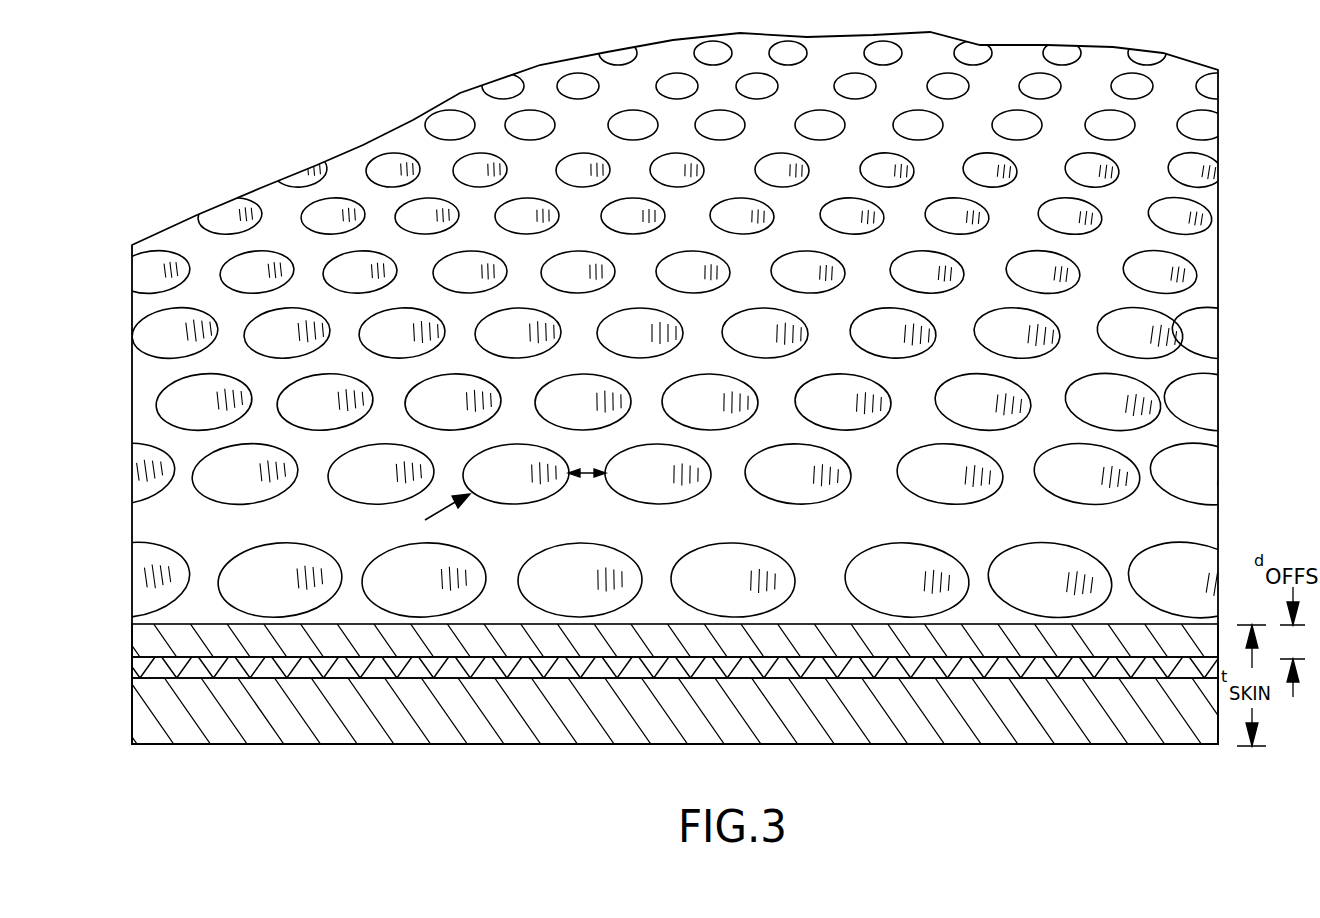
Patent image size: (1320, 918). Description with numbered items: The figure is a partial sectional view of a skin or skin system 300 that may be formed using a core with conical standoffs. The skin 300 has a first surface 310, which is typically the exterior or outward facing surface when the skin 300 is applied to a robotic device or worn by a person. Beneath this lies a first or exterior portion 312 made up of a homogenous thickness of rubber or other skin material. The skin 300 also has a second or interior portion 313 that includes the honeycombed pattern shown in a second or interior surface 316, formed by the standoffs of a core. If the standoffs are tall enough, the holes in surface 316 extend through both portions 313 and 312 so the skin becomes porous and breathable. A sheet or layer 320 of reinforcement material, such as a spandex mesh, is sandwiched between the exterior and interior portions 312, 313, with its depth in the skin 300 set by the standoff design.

The skin 300 is at (208, 112).
The first surface 310 is at (177, 743).
The first or exterior portion 312 is at (147, 707).
The second or interior portion 313 is at (132, 638).
The second or interior surface 316 is at (181, 615).
The sheet or layer of reinforcement material 320 is at (132, 667).